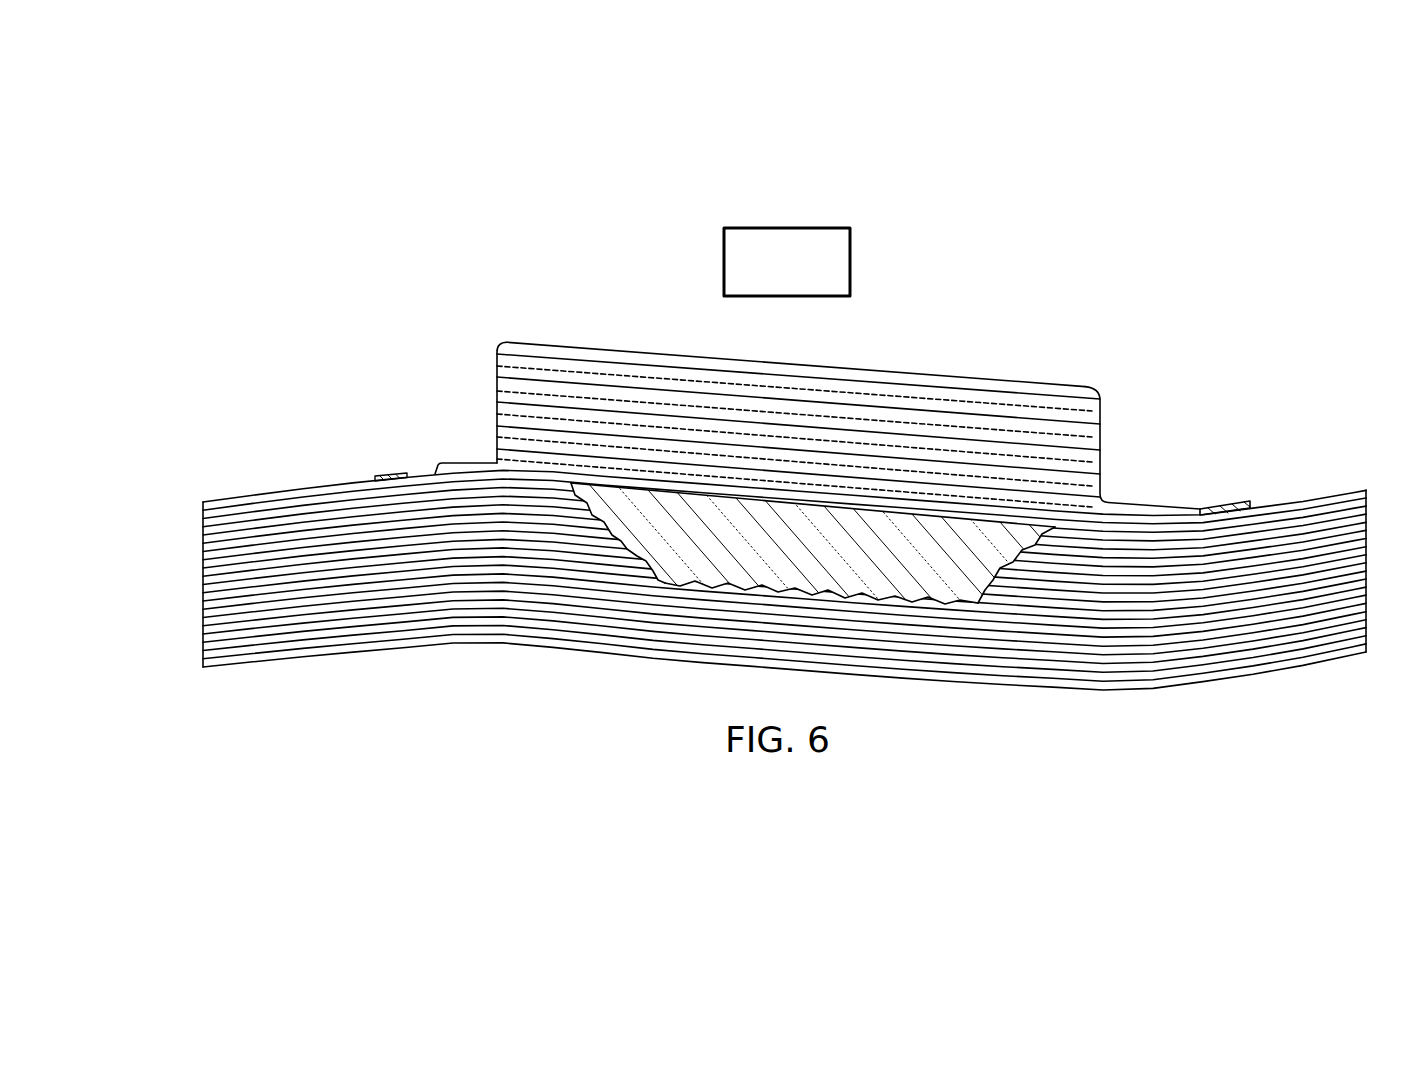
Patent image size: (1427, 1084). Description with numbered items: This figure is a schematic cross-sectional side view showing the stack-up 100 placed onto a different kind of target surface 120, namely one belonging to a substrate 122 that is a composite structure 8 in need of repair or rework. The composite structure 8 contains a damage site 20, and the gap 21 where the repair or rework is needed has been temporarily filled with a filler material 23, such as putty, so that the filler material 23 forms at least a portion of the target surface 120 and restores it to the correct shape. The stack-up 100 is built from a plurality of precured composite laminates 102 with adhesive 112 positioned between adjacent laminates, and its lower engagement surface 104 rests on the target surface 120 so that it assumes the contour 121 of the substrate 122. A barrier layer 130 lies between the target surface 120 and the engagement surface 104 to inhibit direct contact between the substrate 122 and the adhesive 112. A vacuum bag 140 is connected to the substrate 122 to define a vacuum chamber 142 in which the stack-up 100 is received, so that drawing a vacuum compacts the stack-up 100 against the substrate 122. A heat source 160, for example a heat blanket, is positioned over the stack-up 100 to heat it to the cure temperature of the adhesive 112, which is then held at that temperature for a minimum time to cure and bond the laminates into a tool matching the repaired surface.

The composite structure 8 is at (767, 565).
The damage site 20 is at (747, 565).
The gap 21 is at (1000, 575).
The filler material 23 is at (930, 587).
The stack-up 100 is at (835, 396).
The precured composite laminates 102 is at (1023, 447).
The engagement surface 104 is at (854, 561).
The adhesive 112 is at (1077, 463).
The target surface 120 is at (260, 490).
The contour 121 is at (342, 482).
The substrate 122 is at (203, 546).
The barrier layer 130 is at (468, 462).
The vacuum bag 140 is at (496, 362).
The vacuum chamber 142 is at (886, 376).
The heat source 160 is at (782, 226).